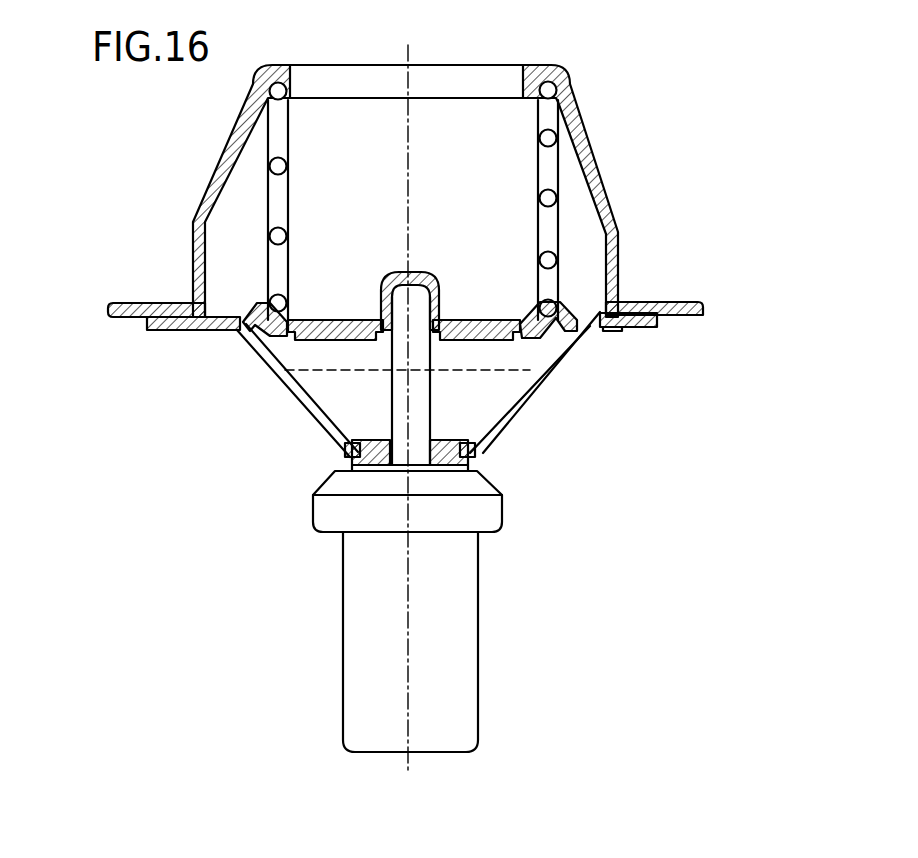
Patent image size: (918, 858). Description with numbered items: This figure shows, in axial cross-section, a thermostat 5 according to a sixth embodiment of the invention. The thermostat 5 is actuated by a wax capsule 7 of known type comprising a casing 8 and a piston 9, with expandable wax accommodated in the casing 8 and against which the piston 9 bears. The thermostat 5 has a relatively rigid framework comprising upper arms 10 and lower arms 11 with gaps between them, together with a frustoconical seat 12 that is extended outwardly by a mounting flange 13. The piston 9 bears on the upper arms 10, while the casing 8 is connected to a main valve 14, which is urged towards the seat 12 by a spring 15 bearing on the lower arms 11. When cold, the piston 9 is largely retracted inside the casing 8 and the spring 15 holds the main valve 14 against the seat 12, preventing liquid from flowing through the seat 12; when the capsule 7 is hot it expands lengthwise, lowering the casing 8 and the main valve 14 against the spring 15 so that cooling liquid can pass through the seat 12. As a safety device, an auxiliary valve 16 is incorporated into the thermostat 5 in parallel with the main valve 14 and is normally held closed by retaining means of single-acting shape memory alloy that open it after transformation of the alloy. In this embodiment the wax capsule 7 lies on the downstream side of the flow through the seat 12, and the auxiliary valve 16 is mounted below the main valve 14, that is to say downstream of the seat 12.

The thermostat 5 is at (545, 443).
The wax capsule 7 is at (486, 625).
The casing 8 is at (390, 638).
The piston 9 is at (415, 305).
The upper arms 10 is at (228, 163).
The lower arms 11 is at (537, 380).
The frustoconical seat 12 is at (247, 337).
The mounting flange 13 is at (131, 303).
The main valve 14 is at (251, 316).
The spring 15 is at (285, 162).
The auxiliary valve 16 is at (331, 320).